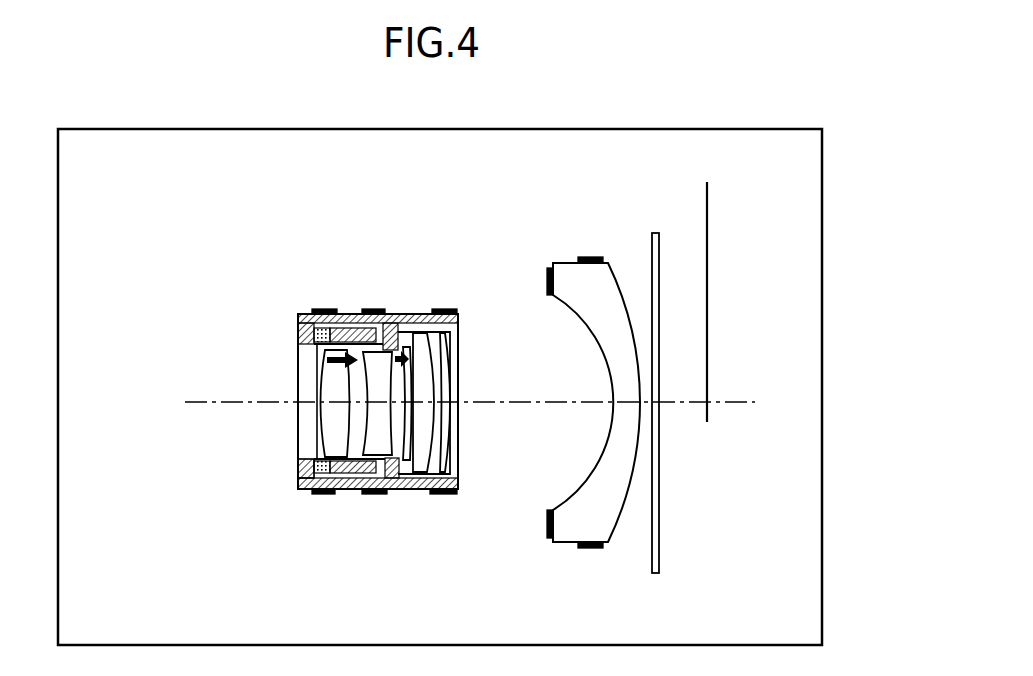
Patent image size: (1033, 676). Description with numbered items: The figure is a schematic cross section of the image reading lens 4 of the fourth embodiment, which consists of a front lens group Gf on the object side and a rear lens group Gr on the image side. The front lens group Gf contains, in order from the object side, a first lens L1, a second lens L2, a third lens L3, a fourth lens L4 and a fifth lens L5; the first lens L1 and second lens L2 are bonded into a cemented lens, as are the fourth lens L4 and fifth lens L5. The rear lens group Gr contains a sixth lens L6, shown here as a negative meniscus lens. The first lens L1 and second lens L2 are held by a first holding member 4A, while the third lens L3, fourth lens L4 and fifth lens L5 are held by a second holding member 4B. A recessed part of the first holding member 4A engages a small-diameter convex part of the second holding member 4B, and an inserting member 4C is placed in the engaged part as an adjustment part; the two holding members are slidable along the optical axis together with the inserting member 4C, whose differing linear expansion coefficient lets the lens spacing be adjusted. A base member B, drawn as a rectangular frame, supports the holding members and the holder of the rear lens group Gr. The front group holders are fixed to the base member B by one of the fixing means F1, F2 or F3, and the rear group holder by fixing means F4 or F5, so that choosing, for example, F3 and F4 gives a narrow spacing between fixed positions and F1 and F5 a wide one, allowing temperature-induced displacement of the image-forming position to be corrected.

The image reading lens 4 is at (338, 379).
The first holding member 4A is at (362, 462).
The second holding member 4B is at (315, 466).
The inserting member 4C is at (305, 483).
The base member B is at (733, 128).
The front lens group Gf is at (453, 185).
The rear lens group Gr is at (613, 185).
The fixing means F1 is at (327, 309).
The fixing means F2 is at (367, 309).
The fixing means F3 is at (442, 309).
The fixing means F4 is at (547, 285).
The fixing means F5 is at (587, 255).
The first lens L1 is at (338, 350).
The second lens L2 is at (367, 352).
The third lens L3 is at (405, 375).
The fourth lens L4 is at (422, 352).
The fifth lens L5 is at (443, 352).
The sixth lens L6 is at (568, 270).